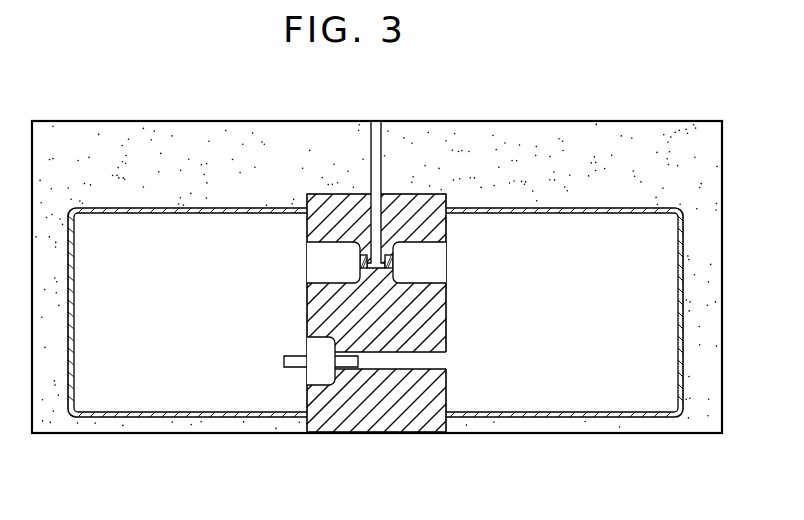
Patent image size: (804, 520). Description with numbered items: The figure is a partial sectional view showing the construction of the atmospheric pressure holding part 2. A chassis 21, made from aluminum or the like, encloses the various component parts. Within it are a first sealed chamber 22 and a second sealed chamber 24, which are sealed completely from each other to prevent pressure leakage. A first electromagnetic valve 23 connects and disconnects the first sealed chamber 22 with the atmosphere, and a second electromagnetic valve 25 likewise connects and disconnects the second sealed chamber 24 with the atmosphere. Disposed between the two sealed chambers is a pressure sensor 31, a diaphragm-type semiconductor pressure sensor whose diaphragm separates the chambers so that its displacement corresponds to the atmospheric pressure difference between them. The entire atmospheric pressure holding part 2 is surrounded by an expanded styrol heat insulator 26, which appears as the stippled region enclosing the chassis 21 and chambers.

The atmospheric pressure holding part 2 is at (375, 307).
The chassis 21 is at (307, 197).
The first sealed chamber 22 is at (204, 226).
The first electromagnetic valve 23 is at (307, 262).
The second sealed chamber 24 is at (524, 222).
The second electromagnetic valve 25 is at (446, 258).
The expanded styrol heat insulator 26 is at (673, 122).
The pressure sensor 31 is at (312, 377).